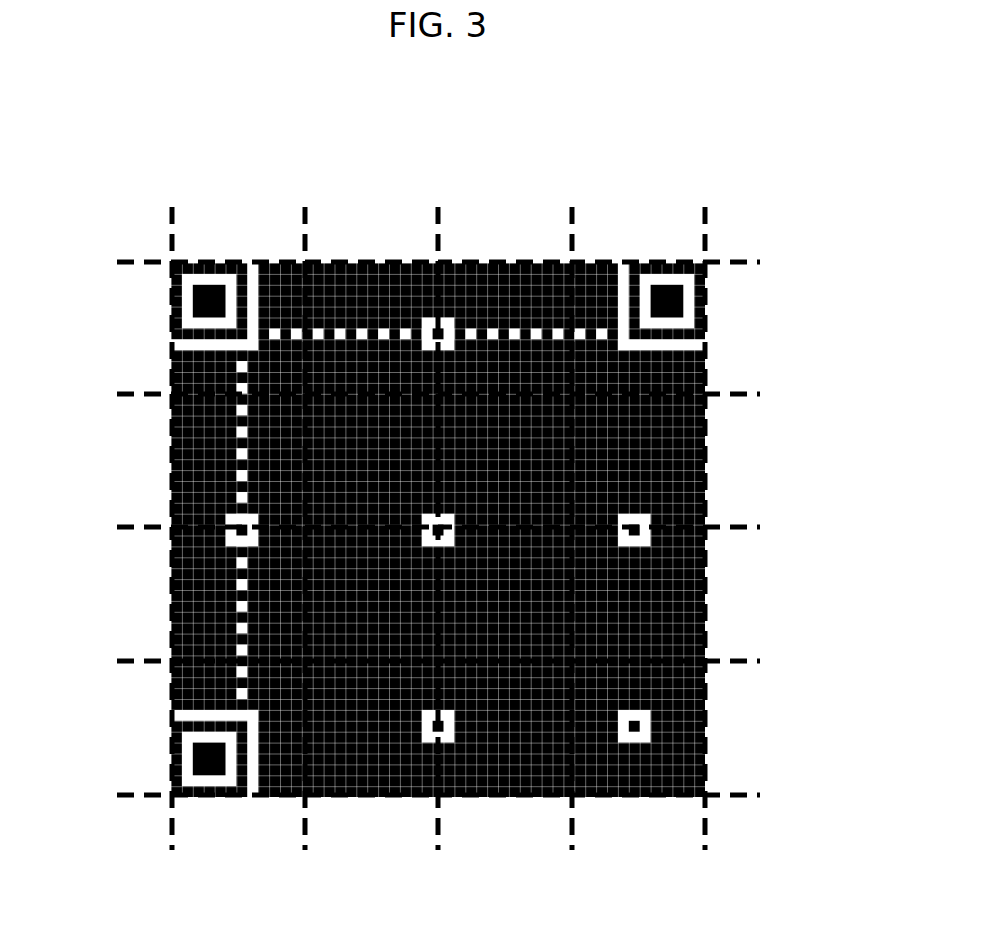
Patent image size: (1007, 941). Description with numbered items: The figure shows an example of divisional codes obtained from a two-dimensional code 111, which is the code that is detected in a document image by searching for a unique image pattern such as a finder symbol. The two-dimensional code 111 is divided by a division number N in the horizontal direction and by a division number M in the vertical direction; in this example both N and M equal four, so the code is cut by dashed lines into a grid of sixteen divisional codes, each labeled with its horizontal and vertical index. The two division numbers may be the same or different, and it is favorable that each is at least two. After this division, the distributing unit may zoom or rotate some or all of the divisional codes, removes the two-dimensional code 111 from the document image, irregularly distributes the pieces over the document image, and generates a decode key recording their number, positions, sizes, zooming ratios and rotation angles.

The 2-dimensional code 111 is at (758, 190).